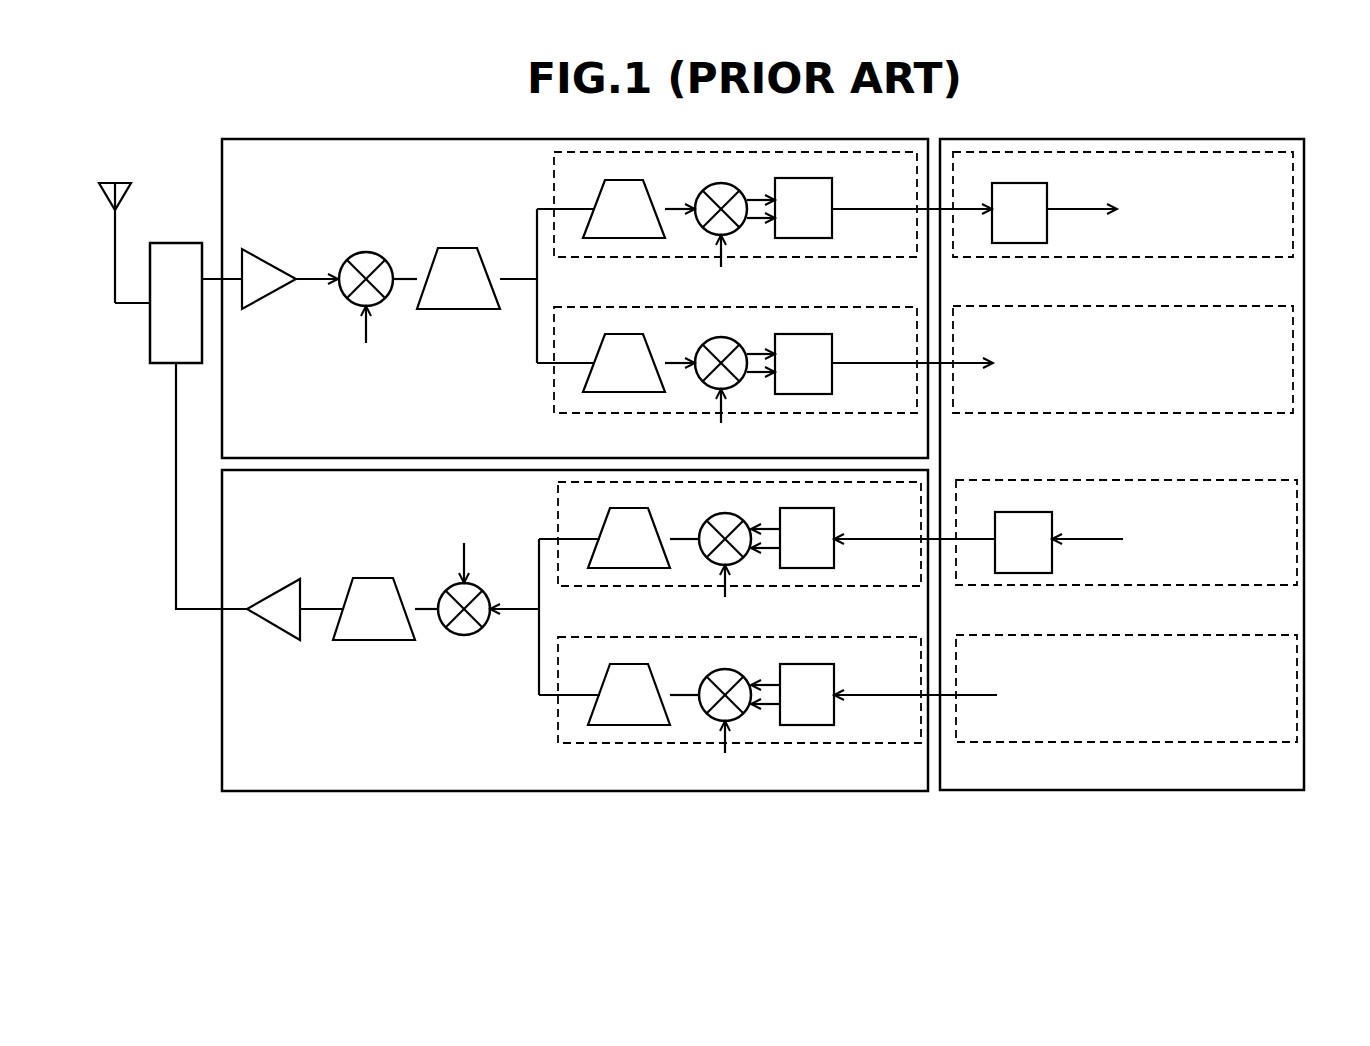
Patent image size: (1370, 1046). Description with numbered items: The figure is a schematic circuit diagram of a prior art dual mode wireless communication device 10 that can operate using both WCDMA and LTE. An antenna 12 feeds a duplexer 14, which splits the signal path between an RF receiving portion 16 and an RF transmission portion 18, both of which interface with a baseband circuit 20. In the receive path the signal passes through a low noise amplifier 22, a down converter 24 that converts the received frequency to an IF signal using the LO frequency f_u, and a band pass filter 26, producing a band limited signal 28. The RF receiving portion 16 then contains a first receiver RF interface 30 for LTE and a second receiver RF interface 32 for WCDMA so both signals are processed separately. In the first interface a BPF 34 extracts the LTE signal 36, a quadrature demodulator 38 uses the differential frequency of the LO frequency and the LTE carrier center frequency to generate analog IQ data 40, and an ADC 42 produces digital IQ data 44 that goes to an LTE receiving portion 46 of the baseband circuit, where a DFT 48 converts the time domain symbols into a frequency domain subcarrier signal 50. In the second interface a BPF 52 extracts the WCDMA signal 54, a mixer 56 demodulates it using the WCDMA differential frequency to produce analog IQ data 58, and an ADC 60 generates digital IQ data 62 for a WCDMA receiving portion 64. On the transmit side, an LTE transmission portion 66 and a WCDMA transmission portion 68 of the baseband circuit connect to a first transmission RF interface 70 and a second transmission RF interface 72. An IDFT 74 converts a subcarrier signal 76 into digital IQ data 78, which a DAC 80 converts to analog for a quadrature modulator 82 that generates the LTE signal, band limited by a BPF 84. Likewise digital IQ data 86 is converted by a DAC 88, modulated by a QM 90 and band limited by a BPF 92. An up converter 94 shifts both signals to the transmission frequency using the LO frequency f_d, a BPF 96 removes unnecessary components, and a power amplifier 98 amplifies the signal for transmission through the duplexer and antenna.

The wireless communication device 10 is at (130, 510).
The antenna 12 is at (106, 201).
The duplexer 14 is at (148, 341).
The RF receiving portion 16 is at (220, 160).
The RF transmission portion 18 is at (220, 736).
The baseband circuit 20 is at (1305, 760).
The low noise amplifier 22 is at (274, 262).
The down converter 24 is at (366, 250).
The band pass filter 26 is at (458, 248).
The band limited signal 28 is at (511, 276).
The first receiver RF interface 30 is at (553, 167).
The second receiver RF interface 32 is at (553, 392).
The BPF 34 is at (627, 180).
The LTE signal 36 is at (686, 206).
The quadrature demodulator (QDEM) 38 is at (698, 218).
The analog IQ data 40 is at (750, 198).
The ADC 42 is at (806, 178).
The digital IQ data 44 is at (852, 209).
The LTE receiving portion 46 is at (1293, 204).
The discrete Fourier transformer (DFT) 48 is at (1047, 226).
The subcarrier signal 50 is at (1054, 205).
The BPF 52 is at (627, 334).
The WCDMA signal 54 is at (686, 360).
The mixer 56 is at (698, 372).
The analog IQ data 58 is at (750, 352).
The ADC 60 is at (806, 334).
The digital IQ data 62 is at (852, 363).
The WCDMA receiving portion 64 is at (1293, 356).
The LTE transmission portion 66 is at (1297, 532).
The WCDMA transmission portion 68 is at (1297, 686).
The first transmission RF interface 70 is at (557, 497).
The second transmission RF interface 72 is at (557, 722).
The discrete inverse Fourier transformer (IDFT) 74 is at (1052, 556).
The subcarrier signal 76 is at (1062, 535).
The digital IQ data 78 is at (855, 536).
The DAC 80 is at (808, 508).
The quadrature modulator (QM) 82 is at (722, 513).
The BPF 84 is at (626, 508).
The digital IQ data 86 is at (855, 692).
The DAC 88 is at (808, 664).
The QM 90 is at (722, 669).
The BPF 92 is at (626, 664).
The up converter 94 is at (472, 585).
The BPF 96 is at (373, 577).
The power amplifier (PA) 98 is at (268, 592).